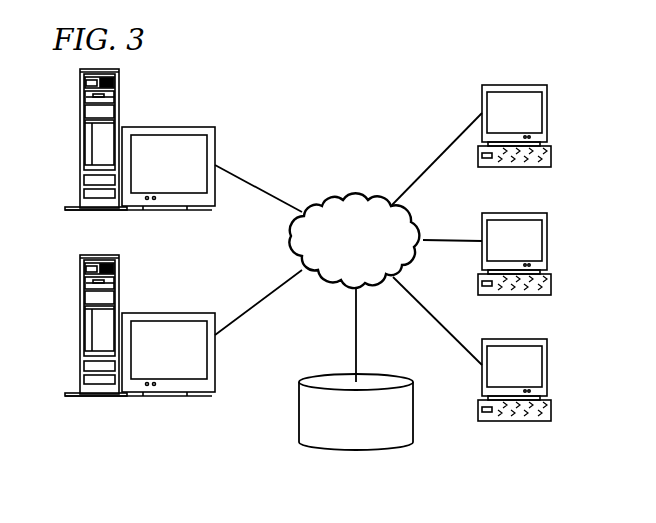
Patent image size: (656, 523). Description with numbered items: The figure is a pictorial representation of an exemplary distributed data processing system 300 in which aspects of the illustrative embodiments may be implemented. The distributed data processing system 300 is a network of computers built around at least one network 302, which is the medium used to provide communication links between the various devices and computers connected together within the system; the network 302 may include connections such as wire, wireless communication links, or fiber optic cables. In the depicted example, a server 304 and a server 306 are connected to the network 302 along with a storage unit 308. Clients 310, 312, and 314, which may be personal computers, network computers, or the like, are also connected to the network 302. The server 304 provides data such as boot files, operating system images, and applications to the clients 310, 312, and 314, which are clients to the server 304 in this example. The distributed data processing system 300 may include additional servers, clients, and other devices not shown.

The distributed data processing system 300 is at (400, 95).
The network 302 is at (330, 198).
The server 304 is at (80, 140).
The server 306 is at (80, 327).
The storage unit 308 is at (340, 450).
The client 310 is at (547, 113).
The client 312 is at (547, 240).
The client 314 is at (547, 367).